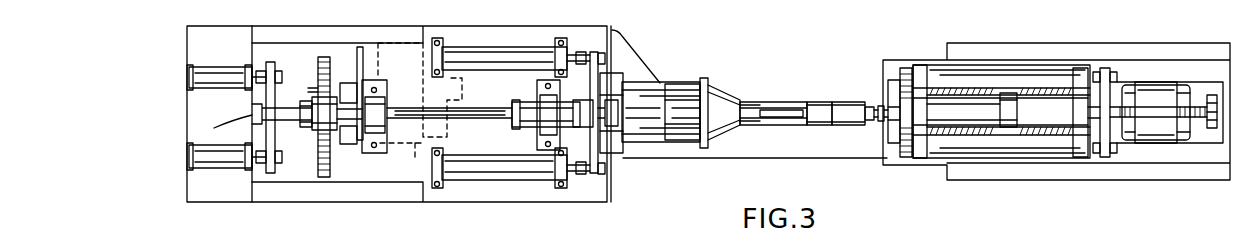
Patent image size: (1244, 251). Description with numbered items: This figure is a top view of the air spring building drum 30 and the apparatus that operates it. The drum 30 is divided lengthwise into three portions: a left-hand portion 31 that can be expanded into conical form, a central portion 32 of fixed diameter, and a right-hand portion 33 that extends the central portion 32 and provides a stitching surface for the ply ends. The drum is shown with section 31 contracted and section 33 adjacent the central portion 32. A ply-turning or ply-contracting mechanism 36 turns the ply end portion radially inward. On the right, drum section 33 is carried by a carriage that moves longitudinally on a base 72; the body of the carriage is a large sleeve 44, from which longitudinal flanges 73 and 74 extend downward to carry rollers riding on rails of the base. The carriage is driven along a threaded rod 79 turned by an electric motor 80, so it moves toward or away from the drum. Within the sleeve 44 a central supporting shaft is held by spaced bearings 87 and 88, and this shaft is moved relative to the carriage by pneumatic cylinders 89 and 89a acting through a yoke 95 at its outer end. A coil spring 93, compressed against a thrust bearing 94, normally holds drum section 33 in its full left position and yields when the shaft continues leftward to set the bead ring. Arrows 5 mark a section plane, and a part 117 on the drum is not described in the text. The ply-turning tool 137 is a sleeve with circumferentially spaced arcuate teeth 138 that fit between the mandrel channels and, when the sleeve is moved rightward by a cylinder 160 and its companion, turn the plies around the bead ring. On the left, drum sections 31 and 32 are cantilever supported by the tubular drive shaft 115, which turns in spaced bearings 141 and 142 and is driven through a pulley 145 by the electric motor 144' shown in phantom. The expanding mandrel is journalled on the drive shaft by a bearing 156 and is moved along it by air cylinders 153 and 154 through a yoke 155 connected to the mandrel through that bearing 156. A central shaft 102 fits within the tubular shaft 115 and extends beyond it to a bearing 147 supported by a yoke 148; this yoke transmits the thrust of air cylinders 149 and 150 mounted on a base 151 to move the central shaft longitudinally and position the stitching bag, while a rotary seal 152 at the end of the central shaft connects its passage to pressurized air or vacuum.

The machine base 5 is at (663, 104).
The building drum 30 is at (790, 102).
The left-hand drum portion 31 is at (752, 102).
The central drum portion 32 is at (825, 102).
The right-hand drum portion 33 is at (858, 102).
The ply-turning mechanism 36 is at (906, 62).
The large sleeve 44 is at (920, 158).
The base 72 is at (1115, 35).
The longitudinal flange 73 is at (1017, 100).
The longitudinal flange 74 is at (1015, 135).
The threaded rod 79 is at (1207, 118).
The electric motor 80 is at (1161, 140).
The bearing 87 is at (1005, 90).
The bearing 88 is at (1080, 68).
The pneumatic cylinder 89 is at (955, 65).
The pneumatic cylinder 89a is at (966, 158).
The coil spring 93 is at (869, 121).
The thrust bearing 94 is at (880, 121).
The yoke 95 is at (1105, 157).
The central shaft 102 is at (290, 124).
The tubular drive shaft 115 is at (470, 118).
The inner rod 117 is at (772, 125).
The ply-turning tool 137 is at (640, 82).
The arcuate teeth 138 is at (683, 84).
The bearing 141 is at (385, 104).
The bearing 142 is at (537, 92).
The electric motor 144' is at (420, 110).
The pulley 145 is at (318, 165).
The bearing 147 is at (252, 110).
The yoke 148 is at (272, 66).
The air cylinder 149 is at (232, 56).
The air cylinder 150 is at (216, 162).
The base 151 is at (215, 200).
The rotary seal 152 is at (252, 128).
The air cylinder 153 is at (515, 47).
The air cylinder 154 is at (495, 180).
The yoke 155 is at (596, 175).
The bearing 156 is at (610, 150).
The cylinder 160 is at (530, 127).